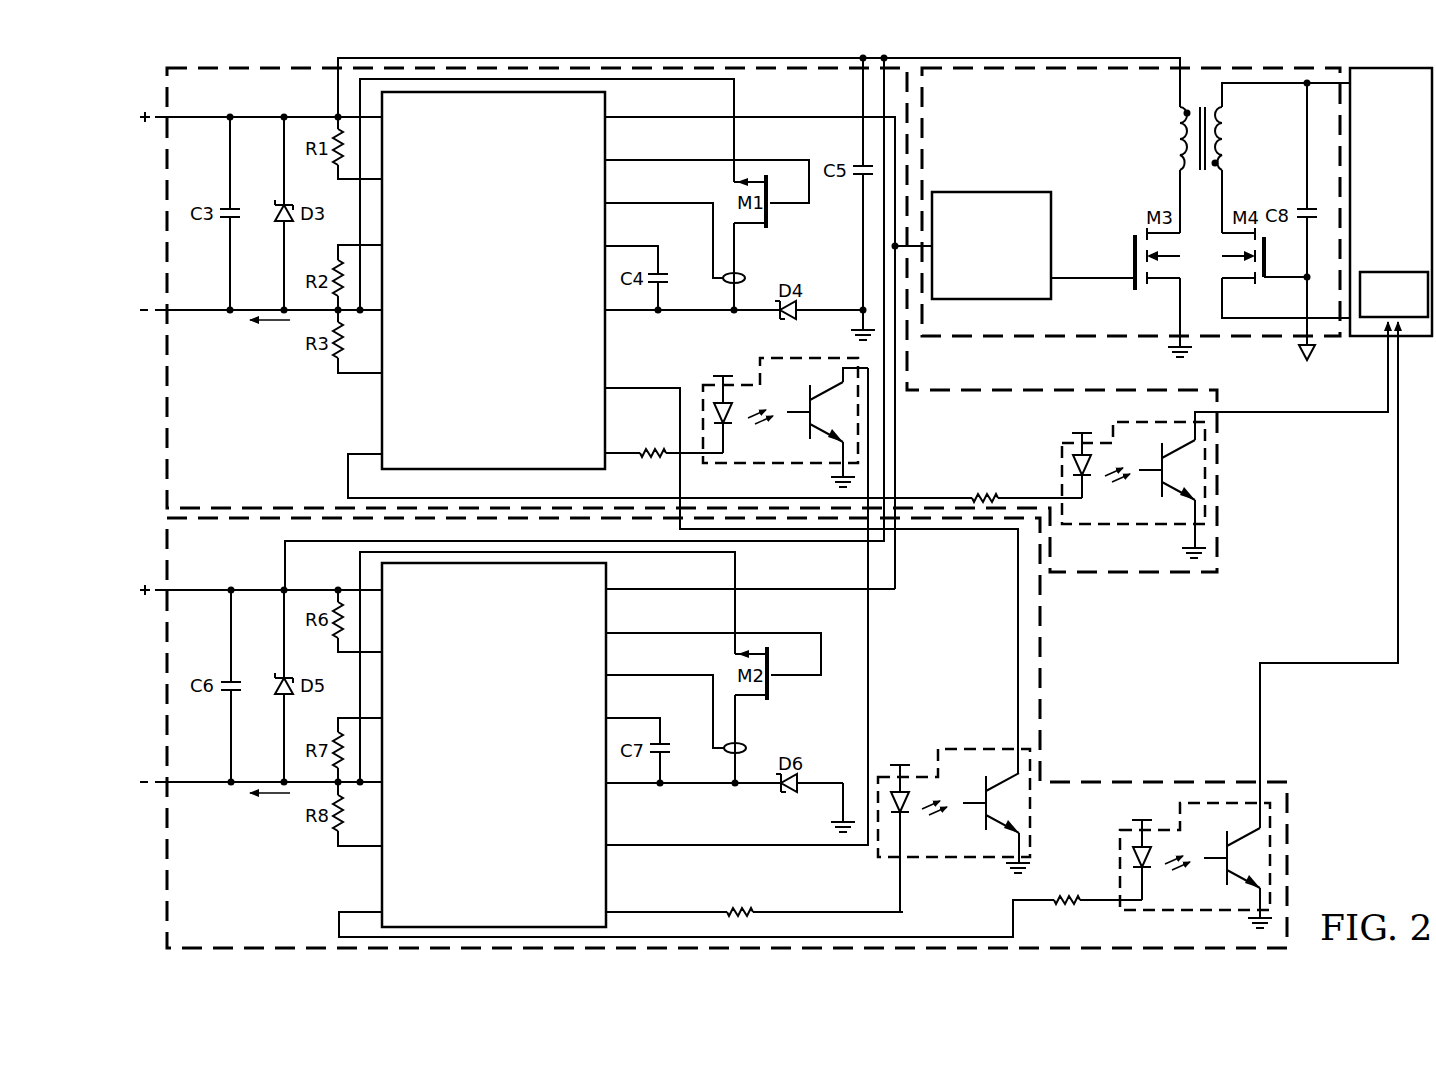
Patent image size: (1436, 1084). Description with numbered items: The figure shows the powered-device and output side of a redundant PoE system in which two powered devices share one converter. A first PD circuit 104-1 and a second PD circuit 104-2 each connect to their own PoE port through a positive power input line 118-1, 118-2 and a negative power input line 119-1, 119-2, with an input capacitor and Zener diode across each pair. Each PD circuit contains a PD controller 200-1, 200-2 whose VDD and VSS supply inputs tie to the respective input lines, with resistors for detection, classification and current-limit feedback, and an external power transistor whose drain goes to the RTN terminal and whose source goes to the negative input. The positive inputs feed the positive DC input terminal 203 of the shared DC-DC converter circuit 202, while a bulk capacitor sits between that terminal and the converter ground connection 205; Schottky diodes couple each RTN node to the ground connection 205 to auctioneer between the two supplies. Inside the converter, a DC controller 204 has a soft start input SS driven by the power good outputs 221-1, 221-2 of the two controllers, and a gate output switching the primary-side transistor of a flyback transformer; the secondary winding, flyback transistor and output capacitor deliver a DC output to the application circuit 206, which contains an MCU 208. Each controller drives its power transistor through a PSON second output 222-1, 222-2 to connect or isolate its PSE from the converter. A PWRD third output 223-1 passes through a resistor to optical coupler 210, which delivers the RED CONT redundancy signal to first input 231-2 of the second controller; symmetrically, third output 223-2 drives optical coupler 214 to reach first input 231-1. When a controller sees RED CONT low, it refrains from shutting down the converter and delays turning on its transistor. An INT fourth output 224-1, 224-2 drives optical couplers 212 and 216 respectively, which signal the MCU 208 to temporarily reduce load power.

The first PD circuit 104-1 is at (163, 181).
The second PD circuit 104-2 is at (163, 634).
The first power input line 118-1 is at (312, 116).
The first power input of second PD circuit 118-2 is at (255, 589).
The second power input line 119-1 is at (198, 312).
The second power input of second PD circuit 119-2 is at (198, 784).
The first PD controller 200-1 is at (528, 180).
The second PD controller 200-2 is at (528, 651).
The shared DC-DC converter circuit 202 is at (1023, 178).
The positive DC input terminal 203 is at (1180, 78).
The DC controller 204 is at (1058, 212).
The ground connection 205 is at (863, 331).
The application circuit 206 is at (1411, 200).
The MCU 208 is at (1400, 271).
The optical coupler circuit 210 is at (797, 451).
The optical coupler 212 is at (1152, 515).
The optical coupler 214 is at (977, 849).
The optical coupler circuit 216 is at (1220, 900).
The first output 221-1 is at (617, 116).
The first output of second controller 221-2 is at (617, 589).
The second output 222-1 is at (617, 159).
The second output of second controller 222-2 is at (617, 632).
The third output 223-1 is at (622, 452).
The third output of second controller 223-2 is at (662, 912).
The fourth output 224-1 is at (348, 487).
The fourth output of second controller 224-2 is at (364, 910).
The first input 231-1 is at (643, 388).
The first input of second controller 231-2 is at (662, 845).